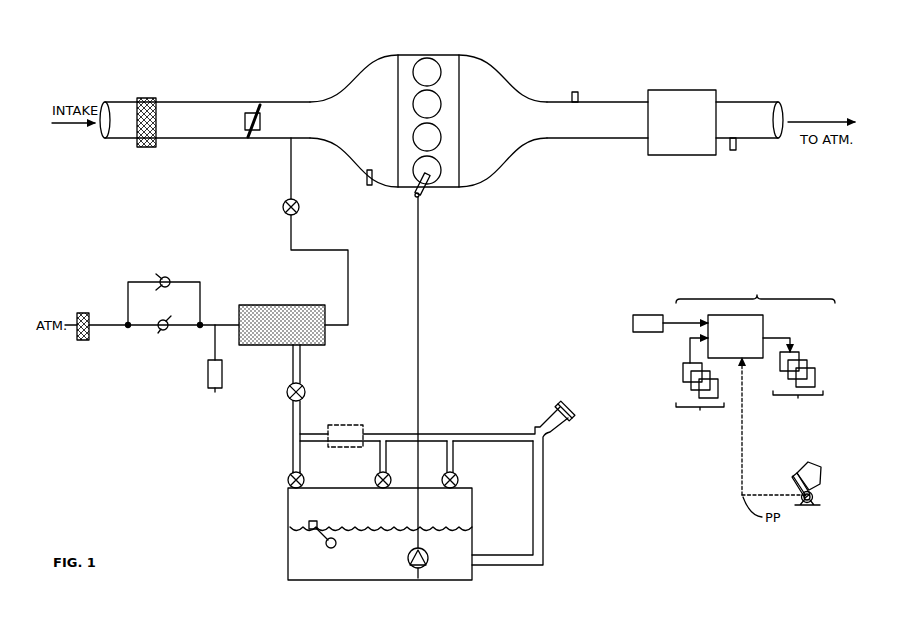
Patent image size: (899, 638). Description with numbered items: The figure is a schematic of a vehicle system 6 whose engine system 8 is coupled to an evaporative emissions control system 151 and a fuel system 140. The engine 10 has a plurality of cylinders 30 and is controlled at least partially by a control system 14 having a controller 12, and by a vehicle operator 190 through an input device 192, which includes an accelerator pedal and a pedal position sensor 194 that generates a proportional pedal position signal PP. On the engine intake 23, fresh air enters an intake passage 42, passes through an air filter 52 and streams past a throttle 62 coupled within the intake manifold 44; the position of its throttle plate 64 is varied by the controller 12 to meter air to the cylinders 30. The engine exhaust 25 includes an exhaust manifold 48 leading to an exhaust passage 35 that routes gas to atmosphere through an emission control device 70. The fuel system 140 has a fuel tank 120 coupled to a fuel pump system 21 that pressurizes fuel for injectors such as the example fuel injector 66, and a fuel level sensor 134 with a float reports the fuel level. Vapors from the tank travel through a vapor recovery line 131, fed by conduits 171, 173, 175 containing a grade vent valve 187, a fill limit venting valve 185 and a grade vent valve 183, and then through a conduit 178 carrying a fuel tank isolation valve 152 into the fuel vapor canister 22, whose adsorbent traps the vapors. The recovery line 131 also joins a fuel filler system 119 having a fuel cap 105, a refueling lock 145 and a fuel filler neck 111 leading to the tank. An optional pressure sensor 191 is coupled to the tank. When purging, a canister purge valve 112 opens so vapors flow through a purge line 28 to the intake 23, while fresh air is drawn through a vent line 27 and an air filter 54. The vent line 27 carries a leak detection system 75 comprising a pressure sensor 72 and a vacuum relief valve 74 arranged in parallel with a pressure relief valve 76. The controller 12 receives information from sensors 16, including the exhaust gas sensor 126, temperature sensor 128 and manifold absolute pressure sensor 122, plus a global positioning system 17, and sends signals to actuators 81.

The vehicle system 6 is at (119, 72).
The engine system 8 is at (742, 78).
The engine 10 is at (460, 108).
The controller 12 is at (735, 336).
The control system 14 is at (755, 283).
The sensors 16 is at (700, 389).
The global positioning system 17 is at (646, 315).
The fuel pump system 21 is at (408, 557).
The fuel vapor canister 22 is at (272, 305).
The engine intake 23 is at (353, 73).
The engine exhaust 25 is at (530, 78).
The vent line 27 is at (74, 341).
The purge line 28 is at (291, 172).
The cylinders 30 is at (443, 72).
The exhaust passage 35 is at (765, 102).
The intake passage 42 is at (125, 141).
The intake manifold 44 is at (354, 121).
The exhaust manifold 48 is at (503, 121).
The air filter 52 is at (149, 98).
The air filter 54 is at (84, 313).
The throttle 62 is at (260, 119).
The throttle plate 64 is at (256, 103).
The fuel injector 66 is at (426, 188).
The emission control device 70 is at (675, 90).
The pressure sensor 72 is at (216, 392).
The vacuum relief valve 74 is at (165, 276).
The leak detection system 75 is at (158, 352).
The pressure relief valve 76 is at (168, 318).
The actuators 81 is at (796, 383).
The fuel cap 105 is at (567, 404).
The fuel filler neck 111 is at (545, 533).
The canister purge valve 112 is at (283, 207).
The fuel filler system 119 is at (538, 403).
The fuel tank 120 is at (473, 513).
The manifold absolute pressure sensor 122 is at (370, 186).
The exhaust gas sensor 126 is at (578, 92).
The temperature sensor 128 is at (733, 150).
The vapor recovery line 131 is at (509, 434).
The fuel level sensor 134 is at (312, 521).
The fuel system 140 is at (592, 543).
The refueling lock 145 is at (572, 422).
The evaporative emissions control system 151 is at (128, 240).
The fuel tank isolation valve 152 is at (306, 392).
The conduit 171 is at (301, 466).
The conduit 173 is at (379, 449).
The conduit 175 is at (446, 448).
The conduit 178 is at (292, 364).
The grade vent valve 183 is at (458, 477).
The fill limit venting valve 185 is at (376, 481).
The grade vent valve 187 is at (304, 480).
The vehicle operator 190 is at (822, 474).
The pressure sensor 191 is at (359, 426).
The input device 192 is at (795, 478).
The pedal position sensor 194 is at (813, 498).